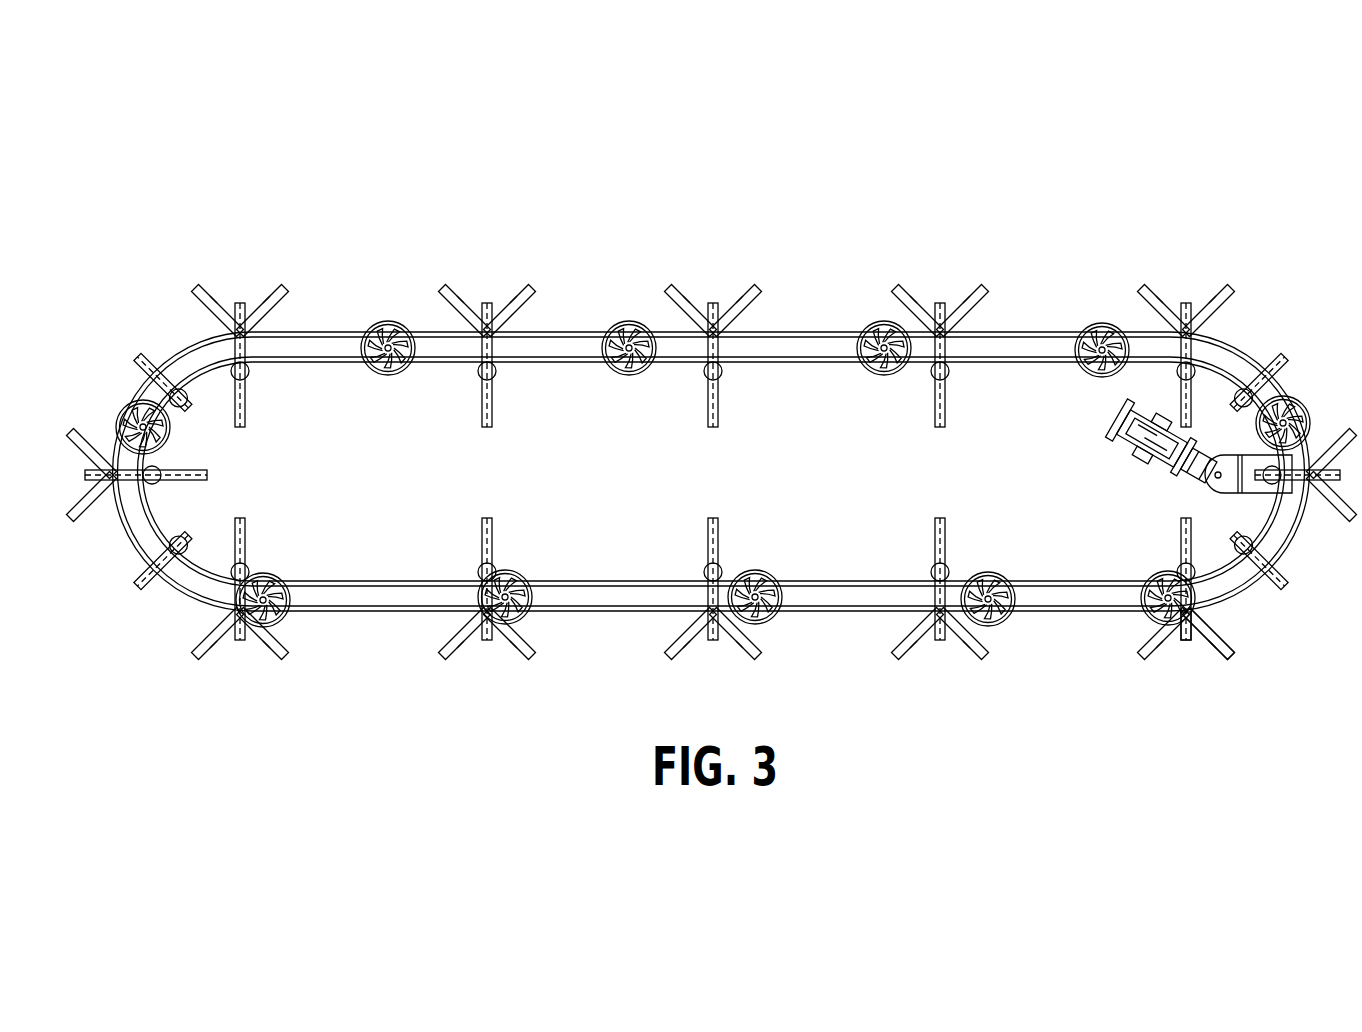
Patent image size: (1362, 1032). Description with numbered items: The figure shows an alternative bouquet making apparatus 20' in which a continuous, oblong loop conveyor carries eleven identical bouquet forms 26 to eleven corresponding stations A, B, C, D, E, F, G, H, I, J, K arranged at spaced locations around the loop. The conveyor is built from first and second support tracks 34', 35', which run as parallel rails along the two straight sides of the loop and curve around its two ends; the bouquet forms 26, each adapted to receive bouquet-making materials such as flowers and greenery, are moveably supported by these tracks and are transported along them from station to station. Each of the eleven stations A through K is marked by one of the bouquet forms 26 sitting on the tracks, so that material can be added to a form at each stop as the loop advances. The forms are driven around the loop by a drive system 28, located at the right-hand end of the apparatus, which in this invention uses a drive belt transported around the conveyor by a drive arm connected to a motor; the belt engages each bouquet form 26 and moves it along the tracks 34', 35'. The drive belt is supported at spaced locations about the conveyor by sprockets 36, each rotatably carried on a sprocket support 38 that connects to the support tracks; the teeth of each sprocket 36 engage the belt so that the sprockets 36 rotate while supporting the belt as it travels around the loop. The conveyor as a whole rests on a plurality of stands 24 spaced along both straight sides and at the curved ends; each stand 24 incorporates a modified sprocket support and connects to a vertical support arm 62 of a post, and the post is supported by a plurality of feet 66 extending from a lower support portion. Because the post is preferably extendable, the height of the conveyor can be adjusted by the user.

The alternative apparatus 20' is at (712, 437).
The stand 24 is at (1168, 528).
The bouquet forms 26 is at (962, 475).
The drive system 28 is at (1145, 444).
The first support track 34' is at (711, 471).
The second support track 35' is at (711, 425).
The sprocket 36 is at (1232, 456).
The sprocket support 38 is at (1293, 582).
The vertical support arm 62 is at (1190, 640).
The feet 66 is at (1236, 653).
The station A is at (884, 318).
The station B is at (1102, 320).
The station C is at (1312, 400).
The station D is at (1168, 640).
The station E is at (990, 648).
The station F is at (755, 658).
The station G is at (505, 648).
The station H is at (262, 645).
The station I is at (116, 407).
The station J is at (388, 318).
The station K is at (629, 318).